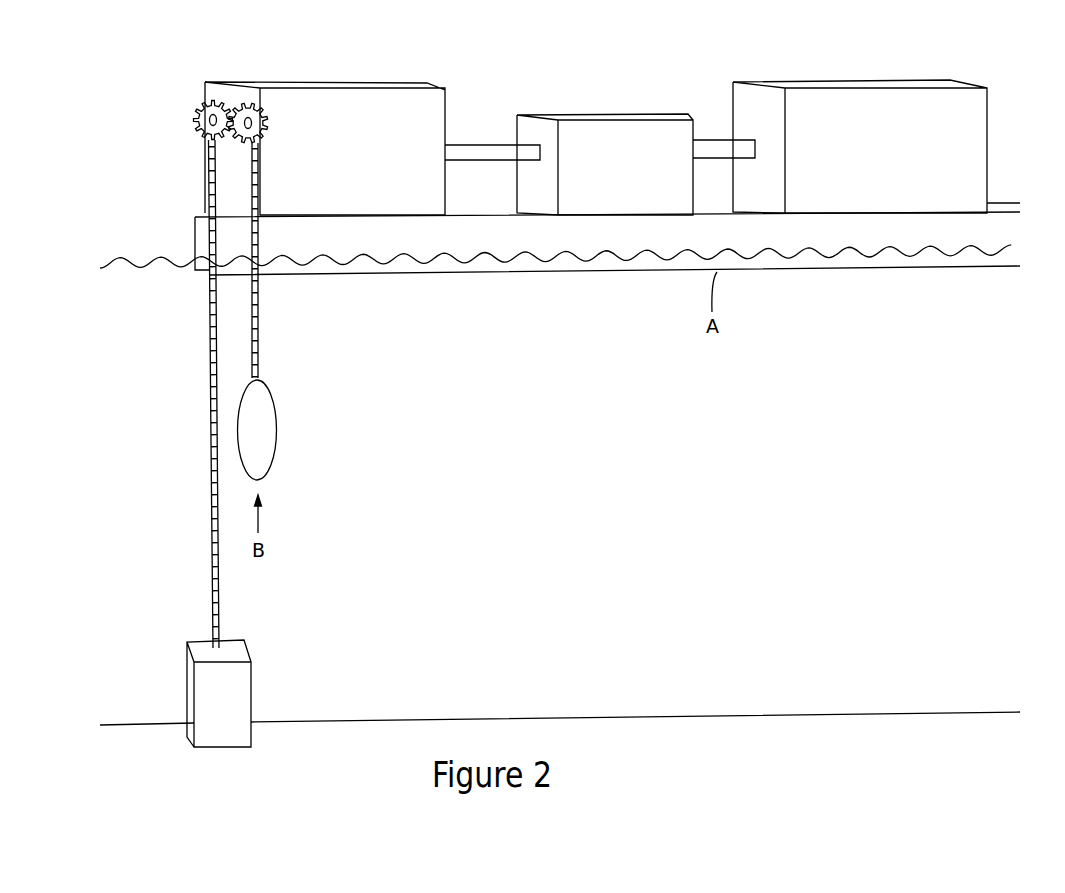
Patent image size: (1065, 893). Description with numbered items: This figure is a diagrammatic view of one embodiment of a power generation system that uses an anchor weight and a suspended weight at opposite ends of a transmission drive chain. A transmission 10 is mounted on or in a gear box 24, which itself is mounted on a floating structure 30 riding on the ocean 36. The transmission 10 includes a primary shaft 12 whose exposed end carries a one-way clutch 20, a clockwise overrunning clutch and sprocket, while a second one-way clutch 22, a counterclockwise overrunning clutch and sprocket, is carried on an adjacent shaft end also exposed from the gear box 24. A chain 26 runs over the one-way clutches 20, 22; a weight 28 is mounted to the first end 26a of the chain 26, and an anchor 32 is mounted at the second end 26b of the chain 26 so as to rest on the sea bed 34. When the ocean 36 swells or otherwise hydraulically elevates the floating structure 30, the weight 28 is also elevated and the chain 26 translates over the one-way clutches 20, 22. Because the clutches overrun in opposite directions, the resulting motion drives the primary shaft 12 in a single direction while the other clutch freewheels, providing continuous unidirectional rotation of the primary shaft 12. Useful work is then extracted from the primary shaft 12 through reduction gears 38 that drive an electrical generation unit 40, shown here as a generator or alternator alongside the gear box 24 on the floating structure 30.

The transmission 10 is at (215, 95).
The primary shaft 12 is at (478, 141).
The one-way clutch 20 is at (219, 97).
The one-way clutch 22 is at (252, 97).
The gear box 24 is at (307, 81).
The chain 26 is at (208, 179).
The first end of chain 26a is at (260, 338).
The second end of chain 26b is at (220, 600).
The weight 28 is at (276, 447).
The floating structure 30 is at (827, 235).
The anchor 32 is at (252, 695).
The sea bed 34 is at (708, 716).
The ocean 36 is at (634, 515).
The reduction gears 38 is at (592, 110).
The electrical generation unit 40 is at (853, 80).